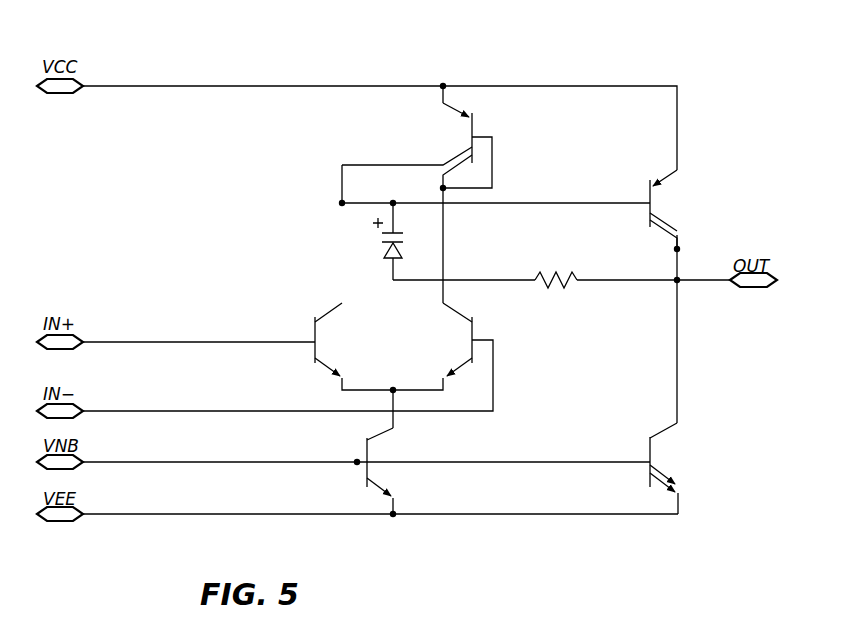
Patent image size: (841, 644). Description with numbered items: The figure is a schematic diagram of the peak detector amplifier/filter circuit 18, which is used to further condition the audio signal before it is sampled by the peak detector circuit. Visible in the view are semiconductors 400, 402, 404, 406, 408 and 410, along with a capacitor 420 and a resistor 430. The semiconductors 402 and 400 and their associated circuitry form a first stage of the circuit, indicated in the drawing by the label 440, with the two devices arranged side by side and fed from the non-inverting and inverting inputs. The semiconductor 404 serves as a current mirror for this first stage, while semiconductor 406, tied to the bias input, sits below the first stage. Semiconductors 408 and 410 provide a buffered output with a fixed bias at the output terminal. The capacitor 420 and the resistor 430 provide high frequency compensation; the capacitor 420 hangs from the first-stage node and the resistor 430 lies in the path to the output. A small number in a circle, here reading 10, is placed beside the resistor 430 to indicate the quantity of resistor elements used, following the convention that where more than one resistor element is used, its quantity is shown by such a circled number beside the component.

The peak detector amplifier/filter circuit 18 is at (157, 71).
The semiconductor 400 is at (314, 325).
The semiconductor 402 is at (474, 325).
The semiconductor 404 is at (473, 128).
The semiconductor 406 is at (385, 432).
The semiconductor 408 is at (673, 172).
The semiconductor 410 is at (672, 430).
The capacitor 420 is at (390, 262).
The resistor 430 is at (563, 285).
The differential pair 440 is at (310, 252).
The resistor value annotation 10 is at (549, 255).